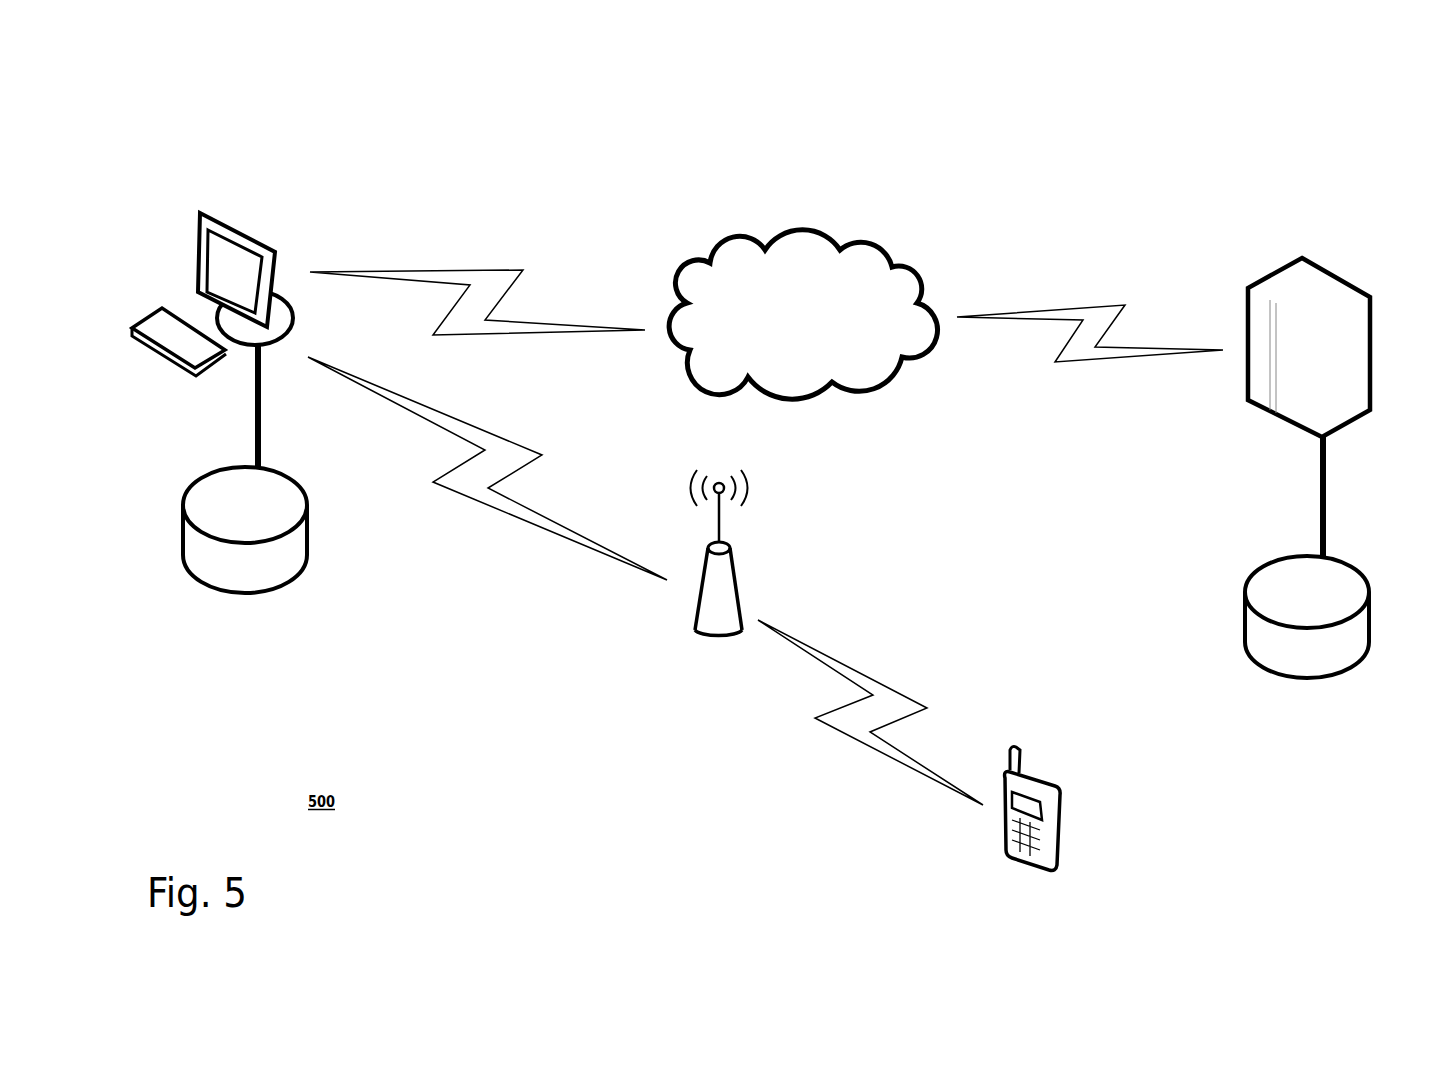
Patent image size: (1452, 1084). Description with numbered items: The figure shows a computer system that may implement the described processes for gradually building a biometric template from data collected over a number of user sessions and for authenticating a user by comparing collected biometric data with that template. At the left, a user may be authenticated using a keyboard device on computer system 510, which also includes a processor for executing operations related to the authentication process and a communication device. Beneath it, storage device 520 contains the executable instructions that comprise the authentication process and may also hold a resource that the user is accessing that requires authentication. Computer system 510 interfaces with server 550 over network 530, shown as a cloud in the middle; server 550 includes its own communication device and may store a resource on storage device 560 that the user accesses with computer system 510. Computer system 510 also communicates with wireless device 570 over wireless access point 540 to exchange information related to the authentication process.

The computer system 510 is at (213, 200).
The storage device 520 is at (238, 592).
The network 530 is at (815, 230).
The wireless access point 540 is at (695, 628).
The server 550 is at (1302, 258).
The storage device 560 is at (1245, 622).
The wireless device 570 is at (1062, 788).